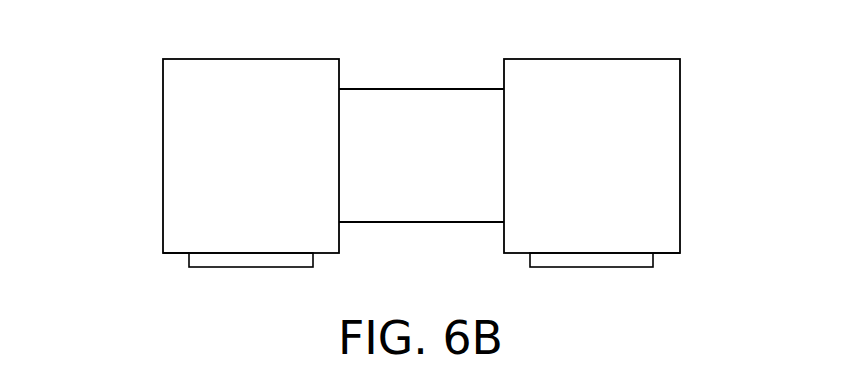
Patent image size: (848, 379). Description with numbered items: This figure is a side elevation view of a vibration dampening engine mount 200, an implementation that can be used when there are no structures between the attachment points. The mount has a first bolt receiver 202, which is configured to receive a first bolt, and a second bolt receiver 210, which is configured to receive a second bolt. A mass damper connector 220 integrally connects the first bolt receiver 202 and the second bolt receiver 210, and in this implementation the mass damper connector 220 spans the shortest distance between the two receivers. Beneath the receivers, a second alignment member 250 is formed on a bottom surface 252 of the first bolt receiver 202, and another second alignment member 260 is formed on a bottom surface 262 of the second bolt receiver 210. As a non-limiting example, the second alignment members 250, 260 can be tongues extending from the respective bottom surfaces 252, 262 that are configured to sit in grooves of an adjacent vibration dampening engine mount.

The vibration dampening engine mount 200 is at (106, 63).
The first bolt receiver 202 is at (172, 104).
The second bolt receiver 210 is at (672, 105).
The mass damper connector 220 is at (428, 97).
The second alignment member 250 is at (250, 267).
The bottom surface 252 is at (172, 254).
The second alignment member 260 is at (663, 253).
The bottom surface 262 is at (592, 267).